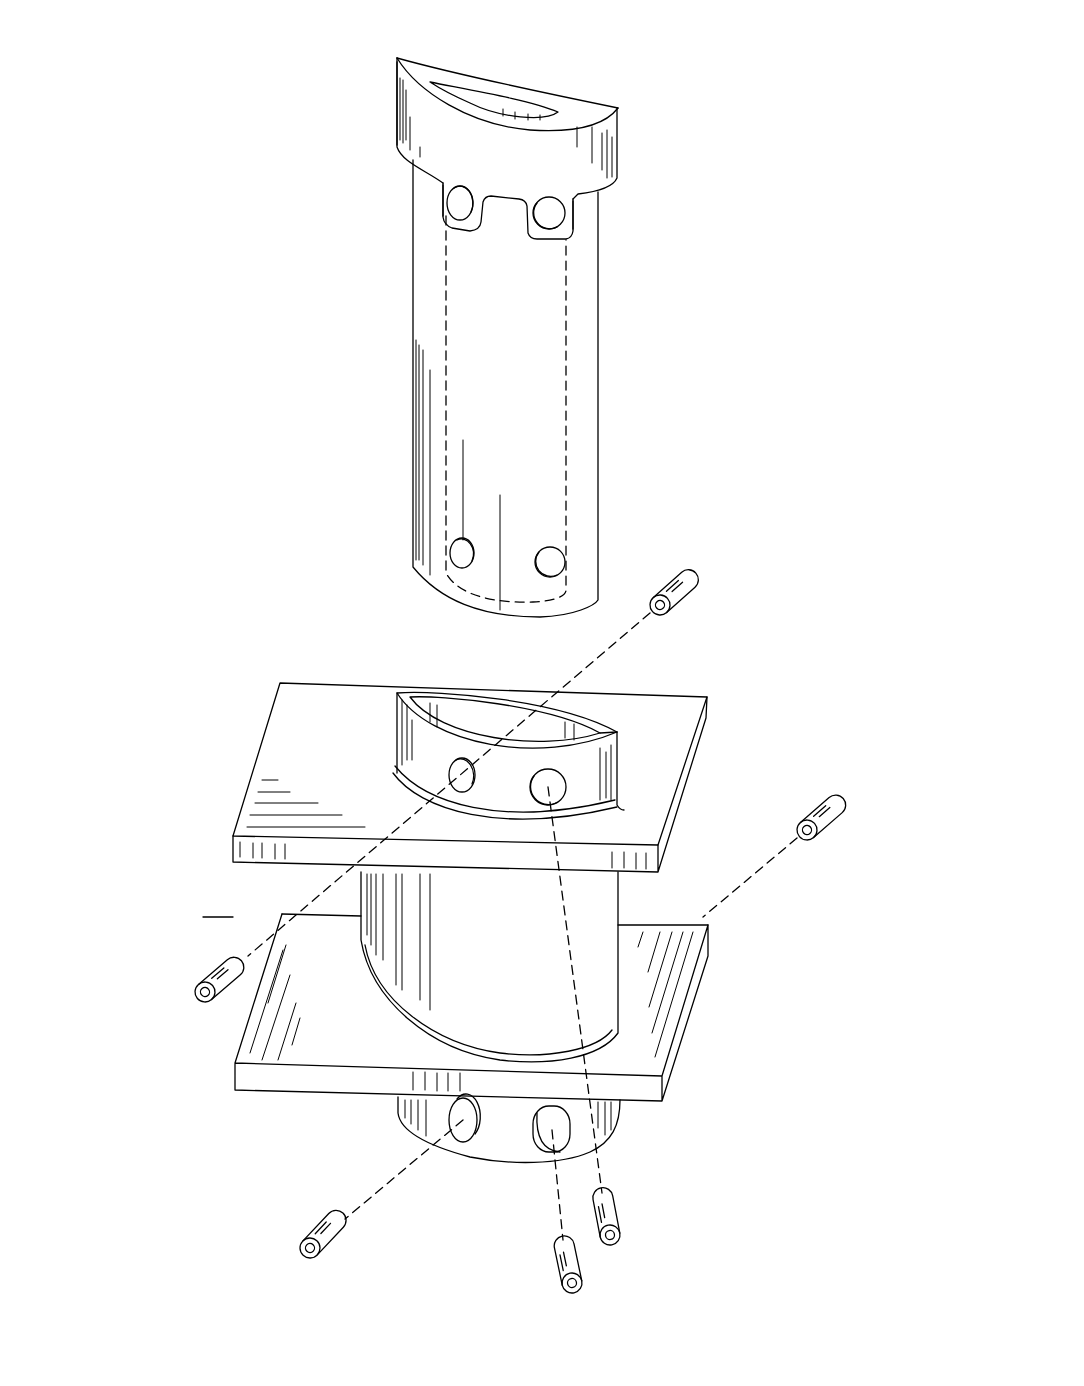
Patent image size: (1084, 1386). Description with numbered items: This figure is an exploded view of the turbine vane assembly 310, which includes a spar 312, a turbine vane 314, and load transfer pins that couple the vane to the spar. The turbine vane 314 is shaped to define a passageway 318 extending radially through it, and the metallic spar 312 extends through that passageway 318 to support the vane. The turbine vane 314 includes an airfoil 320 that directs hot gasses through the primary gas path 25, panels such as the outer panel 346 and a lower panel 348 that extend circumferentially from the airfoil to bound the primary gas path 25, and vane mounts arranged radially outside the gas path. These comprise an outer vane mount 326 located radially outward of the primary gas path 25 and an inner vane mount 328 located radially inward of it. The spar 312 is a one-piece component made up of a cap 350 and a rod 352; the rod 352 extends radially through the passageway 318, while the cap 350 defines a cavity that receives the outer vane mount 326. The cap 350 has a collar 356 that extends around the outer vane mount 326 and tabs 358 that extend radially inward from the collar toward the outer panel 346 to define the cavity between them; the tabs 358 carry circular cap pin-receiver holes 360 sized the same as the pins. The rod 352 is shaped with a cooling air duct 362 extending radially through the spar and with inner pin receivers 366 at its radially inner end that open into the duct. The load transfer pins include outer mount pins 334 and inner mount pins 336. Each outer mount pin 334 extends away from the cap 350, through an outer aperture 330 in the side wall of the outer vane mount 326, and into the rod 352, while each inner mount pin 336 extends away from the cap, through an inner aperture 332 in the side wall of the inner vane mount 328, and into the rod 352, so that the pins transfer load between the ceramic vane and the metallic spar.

The turbine vane assembly 310 is at (206, 90).
The spar 312 is at (266, 256).
The turbine vane 314 is at (121, 818).
The passageway 318 is at (463, 725).
The airfoil 320 is at (628, 902).
The outer vane mount 326 is at (623, 738).
The inner vane mount 328 is at (625, 1127).
The outer aperture 330 is at (441, 770).
The inner aperture 332 is at (517, 1157).
The outer mount pins 334 is at (675, 568).
The inner mount pins 336 is at (830, 800).
The outer panel 346 is at (323, 683).
The lower platform 348 is at (235, 1075).
The cap 350 is at (632, 133).
The rod 352 is at (628, 425).
The collar 356 is at (393, 105).
The tabs 358 is at (441, 213).
The cap pin-receiver holes 360 is at (441, 218).
The cooling air duct 362 is at (513, 108).
The inner pin receivers 366 is at (447, 551).
The primary gas path 25 is at (233, 917).